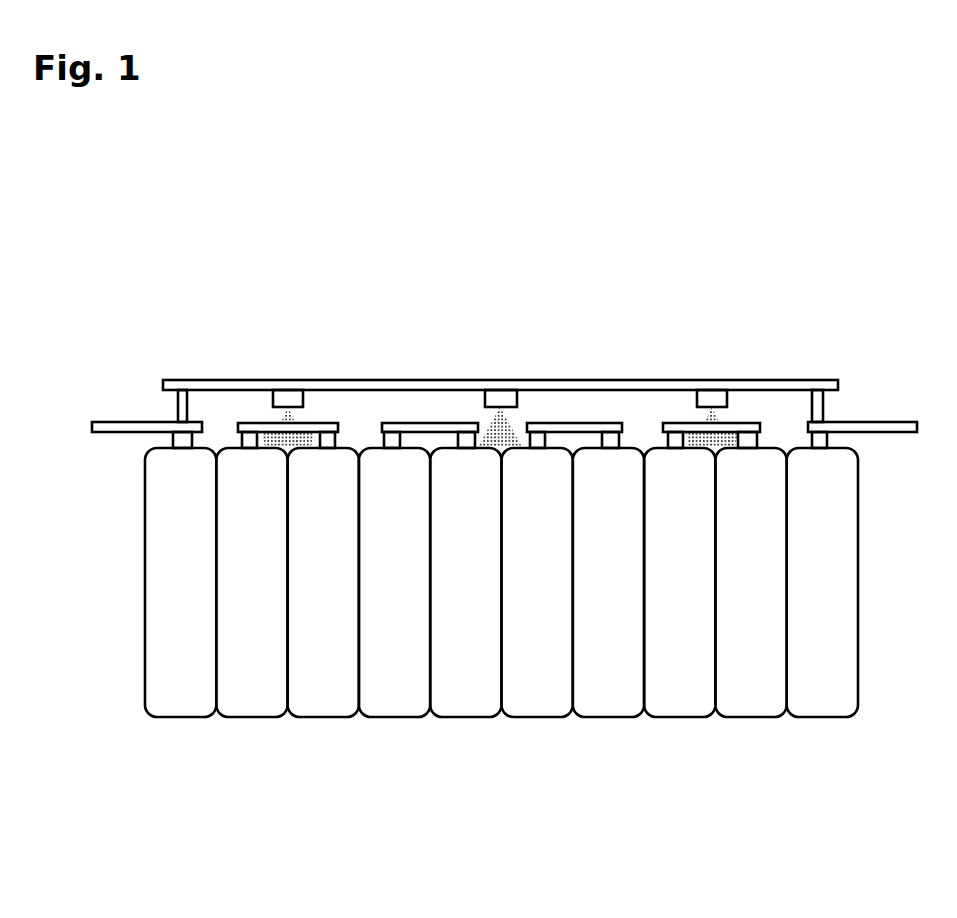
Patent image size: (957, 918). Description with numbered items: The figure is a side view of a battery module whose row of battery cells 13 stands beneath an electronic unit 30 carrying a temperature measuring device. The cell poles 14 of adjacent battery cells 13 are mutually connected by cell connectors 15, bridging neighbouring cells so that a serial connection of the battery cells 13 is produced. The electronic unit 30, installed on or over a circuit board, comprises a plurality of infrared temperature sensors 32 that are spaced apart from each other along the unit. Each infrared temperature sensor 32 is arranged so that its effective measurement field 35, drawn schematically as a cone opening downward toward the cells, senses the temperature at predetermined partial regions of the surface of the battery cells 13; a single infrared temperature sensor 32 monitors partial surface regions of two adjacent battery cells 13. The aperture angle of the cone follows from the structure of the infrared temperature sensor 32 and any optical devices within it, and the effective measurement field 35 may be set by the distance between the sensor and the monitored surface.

The battery cells 13 is at (610, 665).
The cell poles 14 is at (618, 438).
The cell connectors 15 is at (572, 419).
The electronic unit 30 is at (591, 375).
The infrared temperature sensors 32 is at (285, 394).
The effective measurement field 35 is at (290, 441).